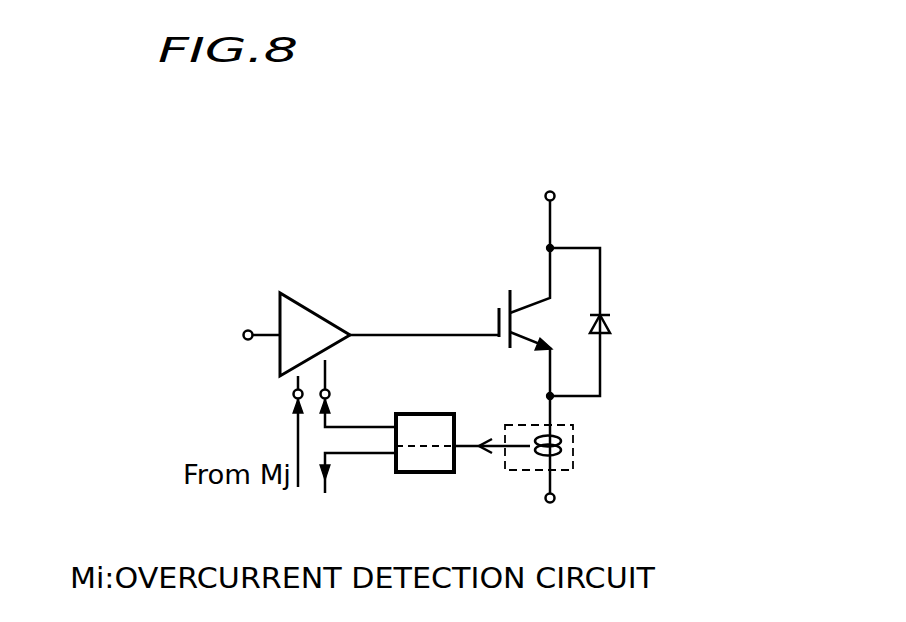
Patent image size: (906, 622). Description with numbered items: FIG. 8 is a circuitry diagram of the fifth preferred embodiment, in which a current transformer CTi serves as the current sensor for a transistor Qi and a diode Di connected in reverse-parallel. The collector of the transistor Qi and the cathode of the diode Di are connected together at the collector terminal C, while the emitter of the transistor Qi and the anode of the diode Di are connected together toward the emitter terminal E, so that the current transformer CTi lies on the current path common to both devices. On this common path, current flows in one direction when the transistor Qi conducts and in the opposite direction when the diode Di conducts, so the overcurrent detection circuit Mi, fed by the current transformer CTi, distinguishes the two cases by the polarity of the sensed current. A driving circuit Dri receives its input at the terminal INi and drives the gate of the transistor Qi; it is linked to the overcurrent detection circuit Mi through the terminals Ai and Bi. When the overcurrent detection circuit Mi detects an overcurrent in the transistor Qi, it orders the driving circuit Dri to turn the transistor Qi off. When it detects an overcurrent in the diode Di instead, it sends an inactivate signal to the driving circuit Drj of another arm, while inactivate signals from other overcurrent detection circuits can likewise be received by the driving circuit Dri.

The input terminal INi is at (236, 334).
The driving circuit Dri is at (305, 306).
The terminal A Ai is at (293, 395).
The terminal B Bi is at (330, 392).
The driving circuit Drj is at (350, 493).
The overcurrent detection circuit Mi is at (427, 474).
The current transformer CTi is at (573, 445).
The collector terminal C is at (562, 213).
The transistor Qi is at (518, 295).
The diode Di is at (607, 315).
The emitter terminal E is at (562, 454).